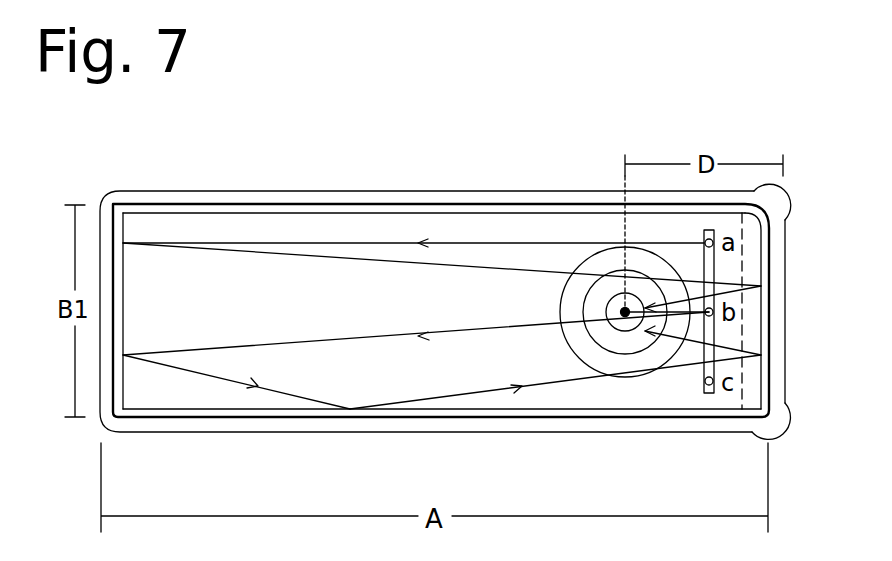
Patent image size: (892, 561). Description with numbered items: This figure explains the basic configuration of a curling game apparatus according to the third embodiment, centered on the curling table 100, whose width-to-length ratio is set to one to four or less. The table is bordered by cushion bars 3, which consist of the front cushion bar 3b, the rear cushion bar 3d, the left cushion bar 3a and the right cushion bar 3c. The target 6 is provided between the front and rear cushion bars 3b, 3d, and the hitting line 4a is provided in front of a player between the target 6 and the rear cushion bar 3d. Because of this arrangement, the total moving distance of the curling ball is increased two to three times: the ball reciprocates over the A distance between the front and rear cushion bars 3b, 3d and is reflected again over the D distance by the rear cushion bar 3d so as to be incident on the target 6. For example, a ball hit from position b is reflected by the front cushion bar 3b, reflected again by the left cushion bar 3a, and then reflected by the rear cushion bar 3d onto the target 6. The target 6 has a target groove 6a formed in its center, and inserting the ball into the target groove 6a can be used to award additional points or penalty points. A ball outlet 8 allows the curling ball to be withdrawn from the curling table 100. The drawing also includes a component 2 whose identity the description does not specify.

The curling table 100 is at (565, 176).
The housing 2 is at (443, 200).
The cushion bars 3 is at (436, 313).
The left cushion bar 3a is at (513, 413).
The front cushion bar 3b is at (124, 355).
The right cushion bar 3c is at (314, 208).
The rear cushion bar 3d is at (767, 318).
The hitting line 4a is at (197, 397).
The target 6 is at (570, 335).
The target groove 6a is at (623, 312).
The ball outlet 8 is at (758, 213).